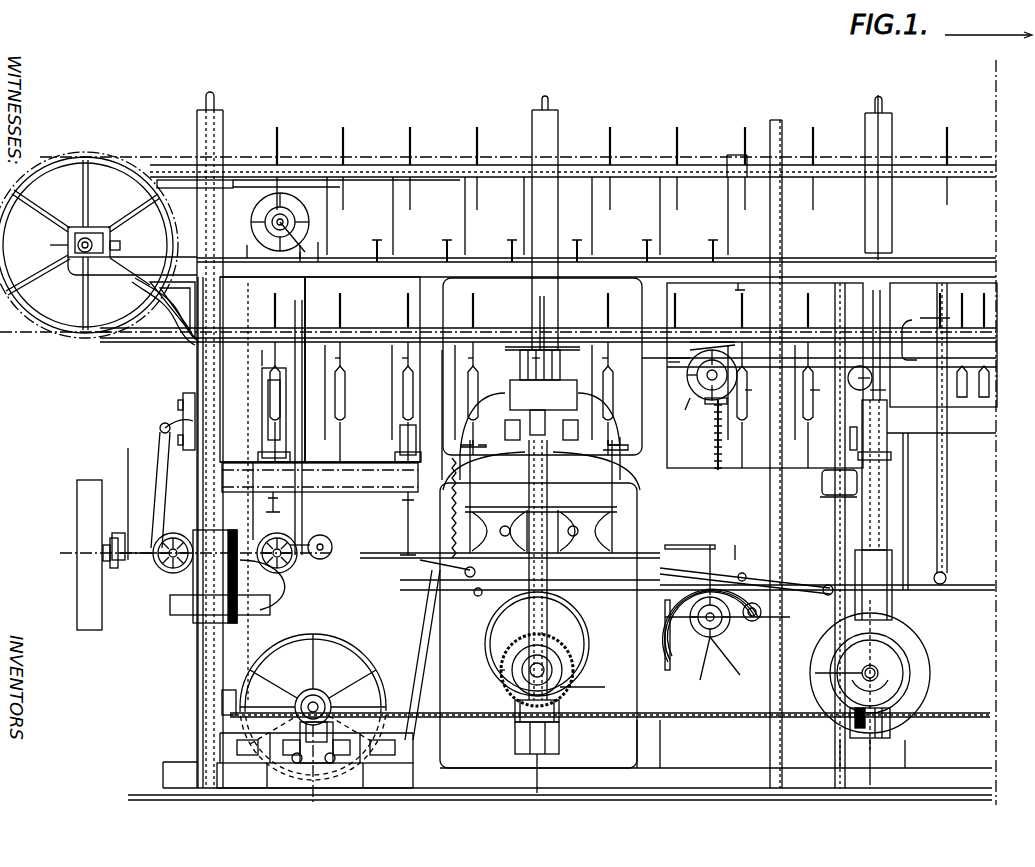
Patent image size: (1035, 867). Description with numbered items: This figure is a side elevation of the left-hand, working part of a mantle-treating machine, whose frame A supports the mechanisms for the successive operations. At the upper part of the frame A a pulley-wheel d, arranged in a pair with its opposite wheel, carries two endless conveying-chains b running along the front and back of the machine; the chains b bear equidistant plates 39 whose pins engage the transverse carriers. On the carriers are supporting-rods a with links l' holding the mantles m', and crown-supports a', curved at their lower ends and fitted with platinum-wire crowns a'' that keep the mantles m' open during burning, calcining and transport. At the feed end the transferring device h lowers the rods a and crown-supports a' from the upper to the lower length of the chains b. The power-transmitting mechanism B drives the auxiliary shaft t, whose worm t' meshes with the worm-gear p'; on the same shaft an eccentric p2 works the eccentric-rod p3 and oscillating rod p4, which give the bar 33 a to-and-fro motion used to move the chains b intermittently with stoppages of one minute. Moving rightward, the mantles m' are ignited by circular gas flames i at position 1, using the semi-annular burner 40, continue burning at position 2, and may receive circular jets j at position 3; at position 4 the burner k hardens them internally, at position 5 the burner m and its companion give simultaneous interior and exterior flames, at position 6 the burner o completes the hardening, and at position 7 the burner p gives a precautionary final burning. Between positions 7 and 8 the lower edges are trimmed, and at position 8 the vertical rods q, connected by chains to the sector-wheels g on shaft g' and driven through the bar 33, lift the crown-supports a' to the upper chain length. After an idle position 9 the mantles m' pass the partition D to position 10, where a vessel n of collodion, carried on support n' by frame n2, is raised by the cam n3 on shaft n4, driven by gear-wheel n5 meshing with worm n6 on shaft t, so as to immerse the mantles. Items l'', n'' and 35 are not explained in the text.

The frame A is at (195, 668).
The power-transmitting mechanism B is at (320, 700).
The partition D is at (882, 352).
The pulley-wheel d is at (98, 248).
The transferring device (rods) h is at (251, 222).
The supporting-rod a is at (629, 227).
The crown-support a' is at (547, 324).
The crown a'' is at (475, 343).
The endless conveying-chain b is at (380, 328).
The circular flames of gas (burner) i is at (262, 388).
The circular jets j is at (400, 425).
The burner k is at (470, 428).
The link l' is at (588, 282).
The cam wheel l'' is at (556, 665).
The burner m is at (541, 393).
The mantle m' is at (629, 405).
The burner o is at (615, 436).
The burner p is at (711, 434).
The worm-gear p' is at (591, 685).
The eccentric p2 is at (567, 648).
The eccentric-rod p3 is at (500, 700).
The oscillating rod p4 is at (420, 665).
The vertical rod q is at (804, 456).
The auxiliary shaft t is at (610, 729).
The worm t' is at (538, 759).
The sector-wheel g is at (712, 641).
The shaft g' is at (727, 622).
The vessel n is at (908, 495).
The support n' is at (895, 455).
The link n'' is at (541, 531).
The frame n2 is at (905, 630).
The cam n3 is at (878, 665).
The shaft n4 is at (824, 670).
The gear-wheel n5 is at (890, 697).
The worm n6 is at (855, 730).
The first stoppage position 1 is at (267, 361).
The second position 2 is at (331, 361).
The third position 3 is at (399, 361).
The fourth position 4 is at (465, 361).
The fifth position 5 is at (529, 361).
The sixth position 6 is at (600, 361).
The seventh position 7 is at (668, 361).
The eighth position 8 is at (754, 391).
The ninth position 9 is at (821, 391).
The tenth position 10 is at (887, 391).
The bar 33 is at (806, 612).
The bracket 35 is at (712, 547).
The plate 39 is at (105, 333).
The burner 40 is at (816, 396).